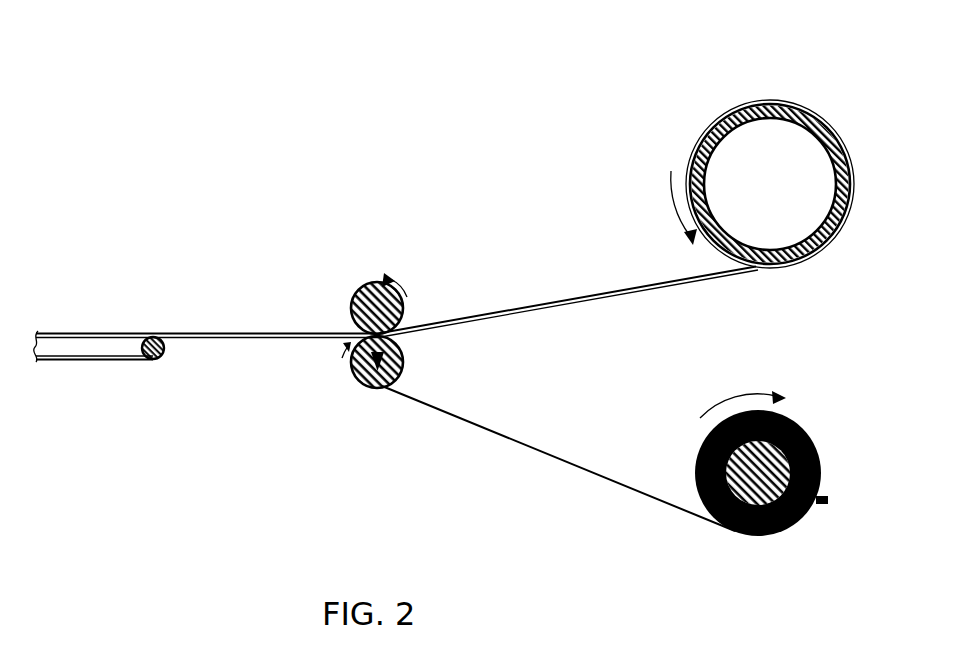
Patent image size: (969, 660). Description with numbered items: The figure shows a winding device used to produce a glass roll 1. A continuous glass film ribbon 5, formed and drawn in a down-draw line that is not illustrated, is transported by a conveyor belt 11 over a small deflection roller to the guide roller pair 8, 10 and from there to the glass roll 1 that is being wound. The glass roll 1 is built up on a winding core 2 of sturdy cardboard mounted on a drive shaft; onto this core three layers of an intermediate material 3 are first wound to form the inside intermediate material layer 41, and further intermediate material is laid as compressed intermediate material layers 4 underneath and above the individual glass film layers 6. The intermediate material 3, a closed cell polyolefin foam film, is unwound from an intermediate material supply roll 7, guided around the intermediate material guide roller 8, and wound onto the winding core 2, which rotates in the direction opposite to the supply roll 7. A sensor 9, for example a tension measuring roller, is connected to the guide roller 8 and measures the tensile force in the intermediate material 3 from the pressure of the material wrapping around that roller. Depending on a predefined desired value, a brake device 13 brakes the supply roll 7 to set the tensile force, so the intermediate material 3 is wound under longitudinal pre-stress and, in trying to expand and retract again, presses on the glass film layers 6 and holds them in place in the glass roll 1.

The glass roll 1 is at (692, 127).
The winding core 2 is at (840, 125).
The intermediate material 3 is at (477, 324).
The compressed intermediate material layer 4 is at (850, 184).
The inside intermediate material layer 41 is at (853, 181).
The glass film ribbon 5 is at (210, 333).
The glass film layers 6 is at (835, 243).
The intermediate material supply roll 7 is at (806, 422).
The intermediate material guide roller 8 is at (403, 354).
The sensor 9 is at (342, 358).
The guide roller 10 is at (360, 288).
The conveyor belt 11 is at (160, 359).
The brake device 13 is at (828, 503).